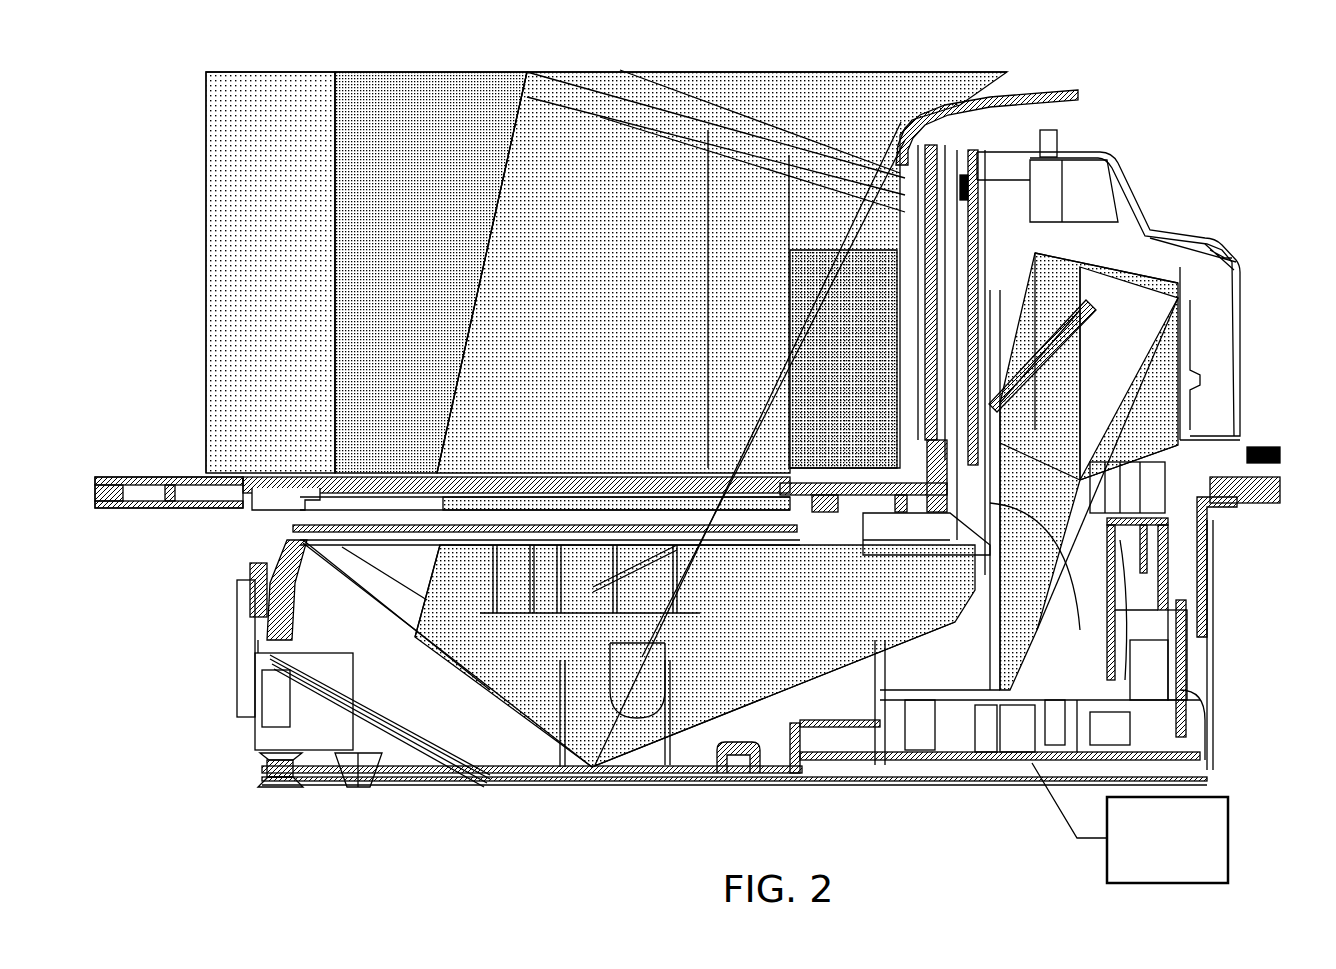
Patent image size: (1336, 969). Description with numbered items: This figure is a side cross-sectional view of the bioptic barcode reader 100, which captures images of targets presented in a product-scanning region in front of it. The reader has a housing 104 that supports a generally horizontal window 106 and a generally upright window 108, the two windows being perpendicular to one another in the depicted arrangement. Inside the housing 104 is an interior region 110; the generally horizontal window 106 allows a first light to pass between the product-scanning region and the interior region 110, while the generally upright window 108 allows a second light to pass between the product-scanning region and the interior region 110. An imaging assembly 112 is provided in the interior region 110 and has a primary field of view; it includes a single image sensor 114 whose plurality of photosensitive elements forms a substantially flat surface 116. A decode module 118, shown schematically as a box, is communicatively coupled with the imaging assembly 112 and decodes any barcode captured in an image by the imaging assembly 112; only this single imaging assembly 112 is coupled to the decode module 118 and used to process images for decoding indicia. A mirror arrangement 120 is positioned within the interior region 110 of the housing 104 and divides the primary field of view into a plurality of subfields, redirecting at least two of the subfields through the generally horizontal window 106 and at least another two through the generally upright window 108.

The bioptic barcode reader 100 is at (1208, 131).
The housing 104 is at (1147, 648).
The generally horizontal window 106 is at (267, 588).
The generally upright window 108 is at (970, 183).
The interior region 110 is at (1052, 663).
The imaging assembly 112 is at (1087, 718).
The image sensor 114 is at (983, 762).
The substantially flat surface 116 is at (1003, 763).
The decode module 118 is at (1228, 838).
The mirror arrangement 120 is at (950, 628).